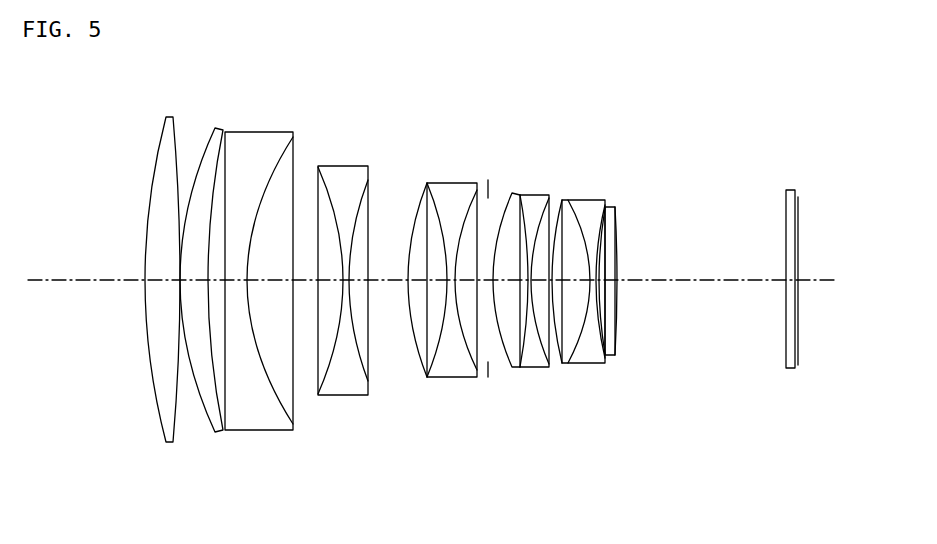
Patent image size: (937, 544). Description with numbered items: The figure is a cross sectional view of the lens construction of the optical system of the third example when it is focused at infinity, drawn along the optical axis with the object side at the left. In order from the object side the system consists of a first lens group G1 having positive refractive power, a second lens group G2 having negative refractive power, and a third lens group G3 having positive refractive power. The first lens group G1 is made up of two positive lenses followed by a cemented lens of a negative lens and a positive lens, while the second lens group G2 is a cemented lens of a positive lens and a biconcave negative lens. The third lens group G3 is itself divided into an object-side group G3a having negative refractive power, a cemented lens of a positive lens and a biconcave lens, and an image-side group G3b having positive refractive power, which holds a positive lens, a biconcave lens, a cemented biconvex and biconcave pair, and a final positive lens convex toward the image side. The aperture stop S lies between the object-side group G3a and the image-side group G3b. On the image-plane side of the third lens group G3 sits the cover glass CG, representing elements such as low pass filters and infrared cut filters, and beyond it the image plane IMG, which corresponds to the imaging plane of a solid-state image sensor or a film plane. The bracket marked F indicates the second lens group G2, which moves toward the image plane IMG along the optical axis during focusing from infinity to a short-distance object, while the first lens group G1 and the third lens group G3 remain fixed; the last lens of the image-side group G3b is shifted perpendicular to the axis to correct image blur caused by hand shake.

The first lens group G1 is at (146, 440).
The second lens group G2 is at (313, 440).
The third lens group G3 is at (522, 338).
The object-side group G3a is at (483, 390).
The image-side group G3b is at (560, 315).
The focusing lens group (movement direction) F is at (313, 137).
The aperture stop S is at (488, 180).
The cover glass CG is at (790, 377).
The image plane IMG is at (798, 185).